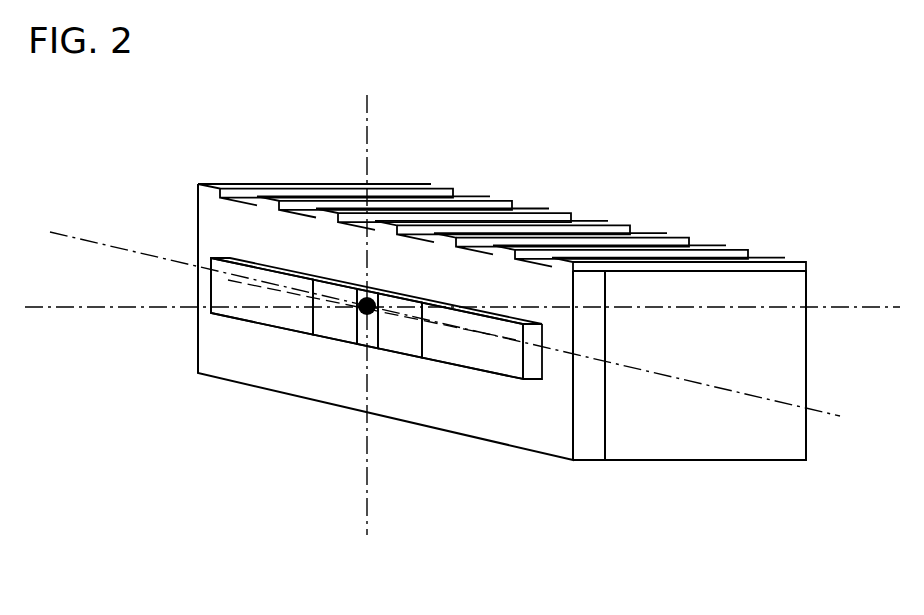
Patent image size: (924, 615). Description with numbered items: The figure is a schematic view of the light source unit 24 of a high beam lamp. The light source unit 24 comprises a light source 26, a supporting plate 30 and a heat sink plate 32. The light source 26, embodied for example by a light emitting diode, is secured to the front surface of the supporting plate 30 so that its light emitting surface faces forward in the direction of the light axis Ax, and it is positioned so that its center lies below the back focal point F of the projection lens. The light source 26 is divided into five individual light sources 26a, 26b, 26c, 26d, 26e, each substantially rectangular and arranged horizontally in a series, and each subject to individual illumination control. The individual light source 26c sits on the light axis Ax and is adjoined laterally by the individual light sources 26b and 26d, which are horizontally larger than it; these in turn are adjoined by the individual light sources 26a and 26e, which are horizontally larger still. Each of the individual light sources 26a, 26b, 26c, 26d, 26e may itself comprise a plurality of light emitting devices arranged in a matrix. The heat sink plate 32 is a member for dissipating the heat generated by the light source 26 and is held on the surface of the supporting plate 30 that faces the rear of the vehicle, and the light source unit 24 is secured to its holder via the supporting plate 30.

The light source unit 24 is at (601, 500).
The light source 26 is at (342, 425).
The individual light source 26a is at (489, 417).
The individual light source 26b is at (400, 340).
The individual light source 26c is at (361, 338).
The individual light source 26d is at (333, 327).
The individual light source 26e is at (278, 308).
The supporting plate 30 is at (218, 212).
The heat sink plate 32 is at (660, 238).
The back focal point F is at (360, 300).
The light axis Ax is at (80, 313).